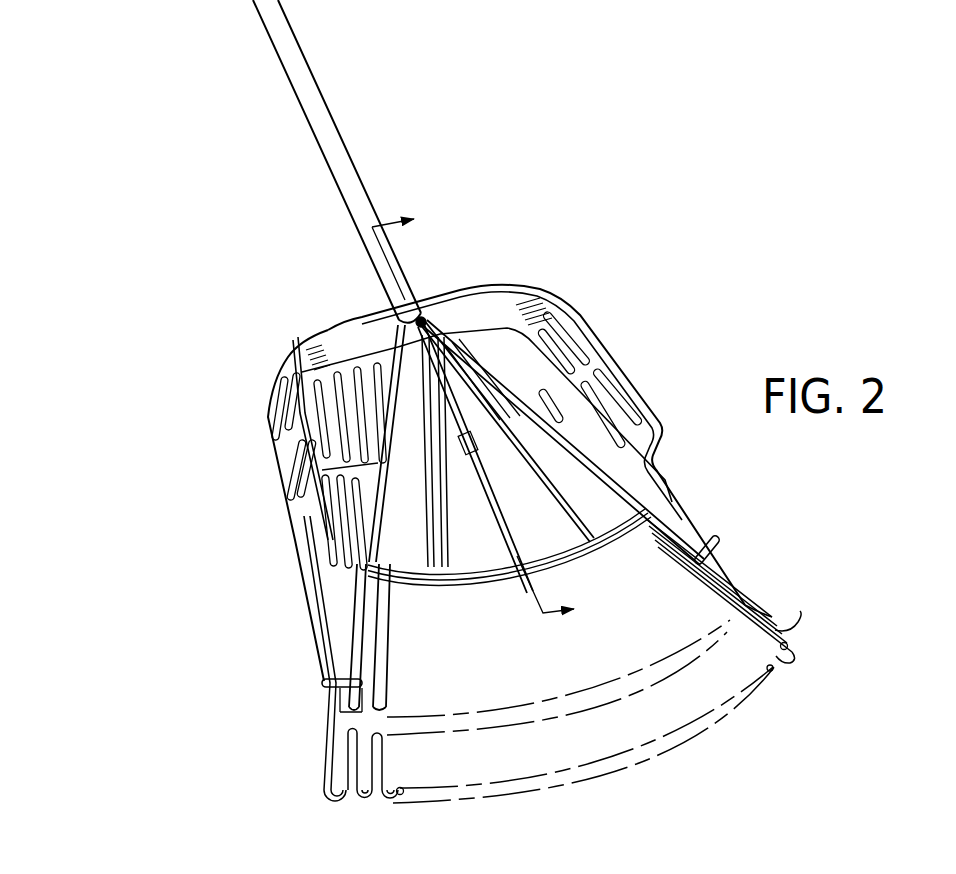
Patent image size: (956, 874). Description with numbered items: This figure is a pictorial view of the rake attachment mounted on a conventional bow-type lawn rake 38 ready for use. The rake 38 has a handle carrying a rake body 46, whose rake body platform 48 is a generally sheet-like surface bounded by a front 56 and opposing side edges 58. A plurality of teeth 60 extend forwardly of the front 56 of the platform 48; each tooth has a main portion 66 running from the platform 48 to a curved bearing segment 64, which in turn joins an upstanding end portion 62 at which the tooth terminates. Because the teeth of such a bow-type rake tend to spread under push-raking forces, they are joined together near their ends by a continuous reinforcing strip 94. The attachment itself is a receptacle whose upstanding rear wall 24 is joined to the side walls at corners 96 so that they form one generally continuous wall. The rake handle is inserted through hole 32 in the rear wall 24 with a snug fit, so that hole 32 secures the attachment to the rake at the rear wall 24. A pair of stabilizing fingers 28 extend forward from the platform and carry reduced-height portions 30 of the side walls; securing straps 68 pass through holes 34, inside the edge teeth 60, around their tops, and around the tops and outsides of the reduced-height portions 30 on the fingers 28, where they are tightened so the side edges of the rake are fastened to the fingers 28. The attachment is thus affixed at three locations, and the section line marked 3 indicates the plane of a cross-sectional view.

The lawn rake 38 is at (326, 82).
The section line 3- 3 is at (486, 413).
The rear wall 24 is at (362, 318).
The corners 96 is at (543, 290).
The hole 32 is at (438, 328).
The side edges 58 is at (322, 465).
The rake body 46 is at (572, 452).
The rake body platform 48 is at (514, 423).
The teeth 60 is at (368, 623).
The holes 34 is at (362, 668).
The reduced-height portions 30 is at (310, 600).
The stabilizing fingers 28 is at (323, 653).
The front 56 is at (667, 527).
The securing straps 68 is at (333, 687).
The reinforcing strip 94 is at (360, 723).
The main portions 66 is at (755, 616).
The end portions 62 is at (788, 646).
The curved bearing segments 64 is at (773, 669).